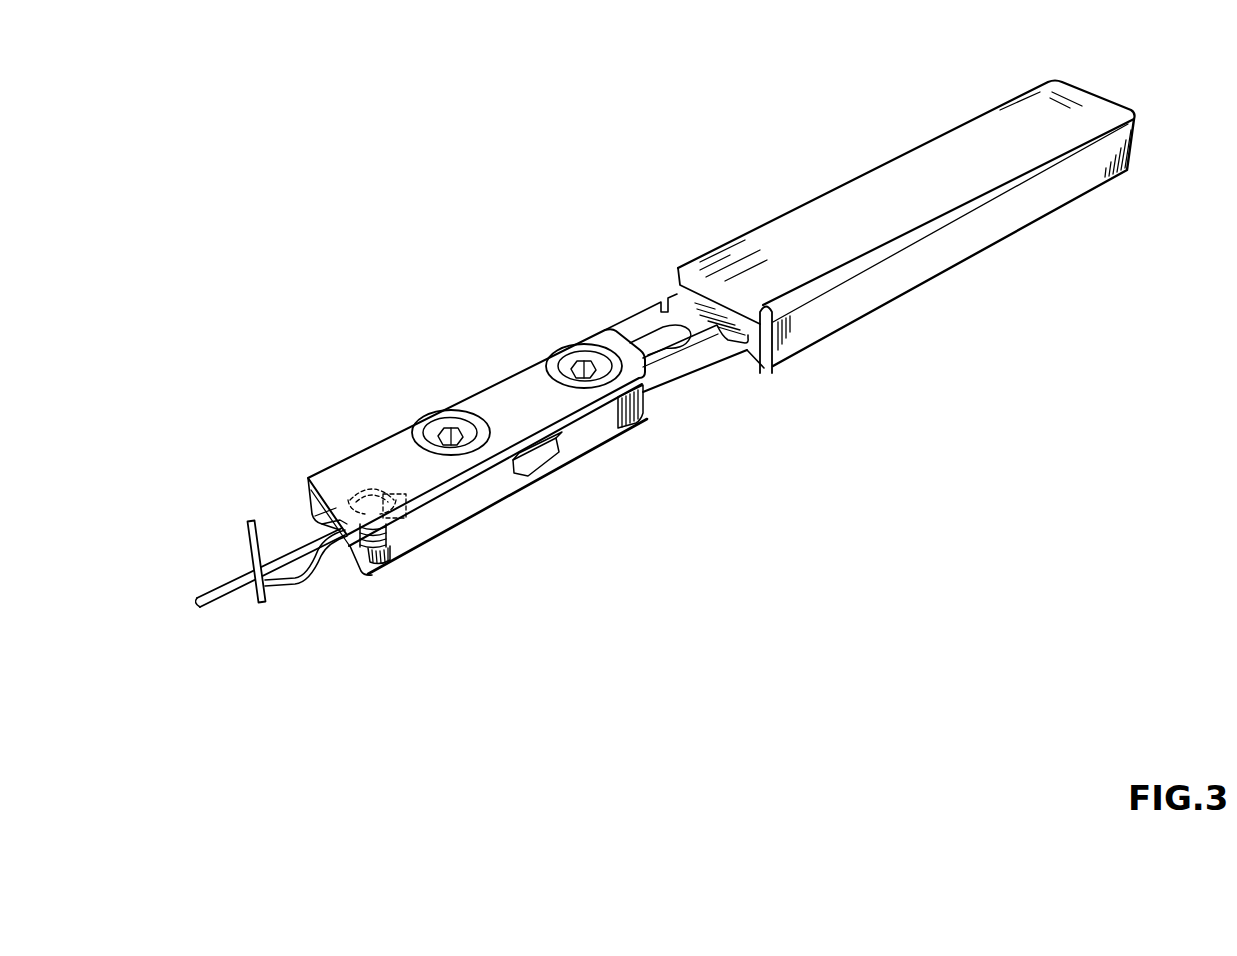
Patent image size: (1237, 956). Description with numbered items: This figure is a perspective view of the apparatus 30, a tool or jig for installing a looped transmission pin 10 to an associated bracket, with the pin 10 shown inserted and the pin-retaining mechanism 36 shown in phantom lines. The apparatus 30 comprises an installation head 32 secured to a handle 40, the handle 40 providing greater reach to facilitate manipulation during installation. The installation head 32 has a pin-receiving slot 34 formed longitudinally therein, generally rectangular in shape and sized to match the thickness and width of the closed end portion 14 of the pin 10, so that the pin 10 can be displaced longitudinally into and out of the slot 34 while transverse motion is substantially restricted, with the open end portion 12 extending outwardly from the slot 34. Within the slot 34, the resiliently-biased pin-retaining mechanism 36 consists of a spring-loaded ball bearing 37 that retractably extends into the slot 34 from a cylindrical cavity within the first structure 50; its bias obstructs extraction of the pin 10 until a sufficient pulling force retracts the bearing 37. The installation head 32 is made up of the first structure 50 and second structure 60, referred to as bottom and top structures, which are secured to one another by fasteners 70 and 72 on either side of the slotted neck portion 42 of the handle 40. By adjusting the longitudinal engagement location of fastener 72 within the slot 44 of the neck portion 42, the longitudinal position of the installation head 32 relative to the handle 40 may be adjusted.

The transmission pin 10 is at (290, 590).
The open end portion 12 is at (247, 612).
The closed end portion 14 is at (387, 503).
The apparatus 30 is at (683, 126).
The installation head 32 is at (620, 430).
The pin-receiving slot 34 is at (312, 512).
The pin-retaining mechanism 36 is at (390, 538).
The spring-loaded ball bearing 37 is at (360, 507).
The handle 40 is at (997, 240).
The slotted neck portion 42 is at (673, 372).
The slot 44 is at (662, 347).
The first structure 50 is at (447, 537).
The second structure 60 is at (532, 387).
The fastener 70 is at (438, 424).
The fastener 72 is at (556, 362).